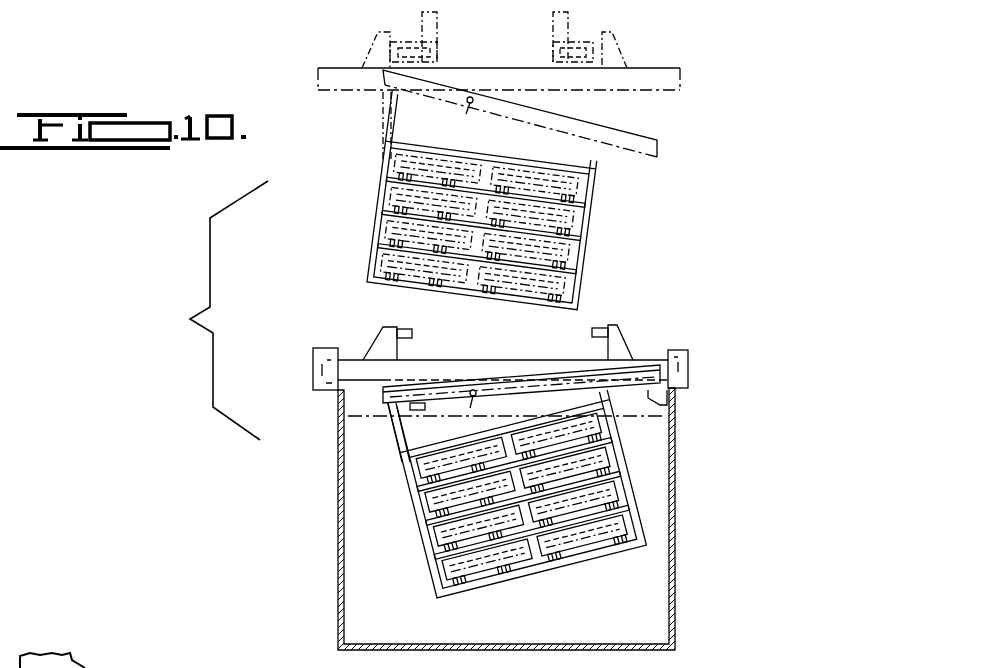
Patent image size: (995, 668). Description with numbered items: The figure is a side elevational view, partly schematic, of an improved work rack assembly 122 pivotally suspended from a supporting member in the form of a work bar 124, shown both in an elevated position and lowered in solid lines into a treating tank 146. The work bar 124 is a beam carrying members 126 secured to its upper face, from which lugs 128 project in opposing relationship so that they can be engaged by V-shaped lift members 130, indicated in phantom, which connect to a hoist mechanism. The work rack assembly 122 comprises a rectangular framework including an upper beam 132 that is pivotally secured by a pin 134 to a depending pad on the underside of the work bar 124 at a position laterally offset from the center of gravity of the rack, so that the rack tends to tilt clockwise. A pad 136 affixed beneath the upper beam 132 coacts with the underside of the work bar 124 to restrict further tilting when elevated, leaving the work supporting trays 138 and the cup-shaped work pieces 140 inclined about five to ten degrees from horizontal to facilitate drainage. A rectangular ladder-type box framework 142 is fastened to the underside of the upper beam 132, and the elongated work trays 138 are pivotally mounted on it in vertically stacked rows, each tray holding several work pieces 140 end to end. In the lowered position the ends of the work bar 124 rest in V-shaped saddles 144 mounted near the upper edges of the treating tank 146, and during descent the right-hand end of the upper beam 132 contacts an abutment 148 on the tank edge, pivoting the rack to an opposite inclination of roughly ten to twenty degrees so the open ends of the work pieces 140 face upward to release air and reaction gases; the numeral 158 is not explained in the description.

The work rack assembly 122 is at (598, 253).
The work bar 124 is at (683, 82).
The members 126 is at (618, 56).
The lugs 128 is at (590, 40).
The V-shaped lift members 130 is at (552, 47).
The upper beam 132 is at (648, 128).
The pin 134 is at (467, 105).
The pad 136 is at (384, 113).
The work supporting trays 138 is at (598, 205).
The cup-shaped work pieces 140 is at (385, 190).
The ladder-type box framework 142 is at (372, 215).
The V-shaped saddles 144 is at (313, 357).
The treating tank 146 is at (340, 500).
The abutment 148 is at (655, 403).
The base 158 is at (305, 662).